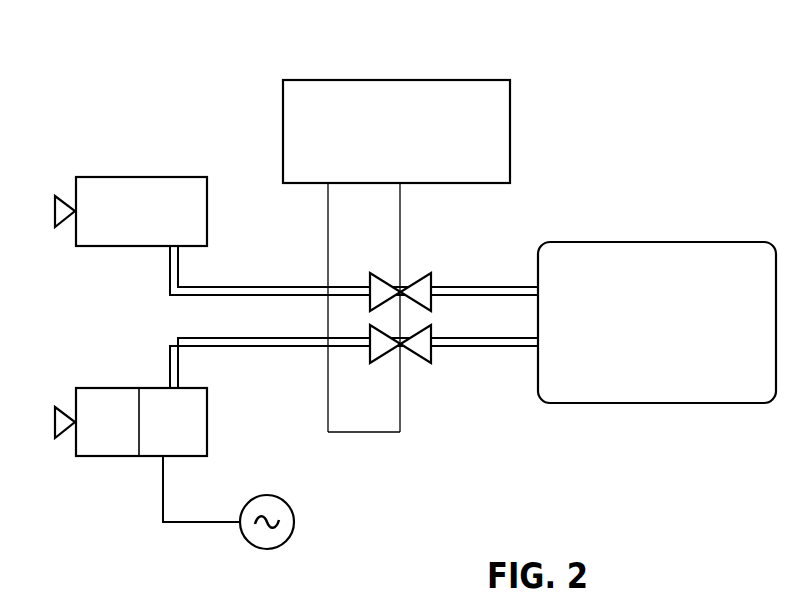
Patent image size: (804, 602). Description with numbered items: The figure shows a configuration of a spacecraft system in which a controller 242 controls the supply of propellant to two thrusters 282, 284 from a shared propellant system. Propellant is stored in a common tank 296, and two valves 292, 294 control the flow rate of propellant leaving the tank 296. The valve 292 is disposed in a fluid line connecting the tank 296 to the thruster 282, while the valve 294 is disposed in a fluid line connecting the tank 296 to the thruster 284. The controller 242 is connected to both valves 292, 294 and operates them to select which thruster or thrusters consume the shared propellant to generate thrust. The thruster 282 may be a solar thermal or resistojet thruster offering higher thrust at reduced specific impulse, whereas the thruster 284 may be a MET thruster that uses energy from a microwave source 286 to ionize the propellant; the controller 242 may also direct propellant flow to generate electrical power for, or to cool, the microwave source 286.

The controller 242 is at (378, 80).
The thruster 282 is at (163, 177).
The thruster 284 is at (132, 388).
The microwave source 286 is at (291, 512).
The valve 292 is at (408, 288).
The valve 294 is at (410, 350).
The tank 296 is at (640, 242).